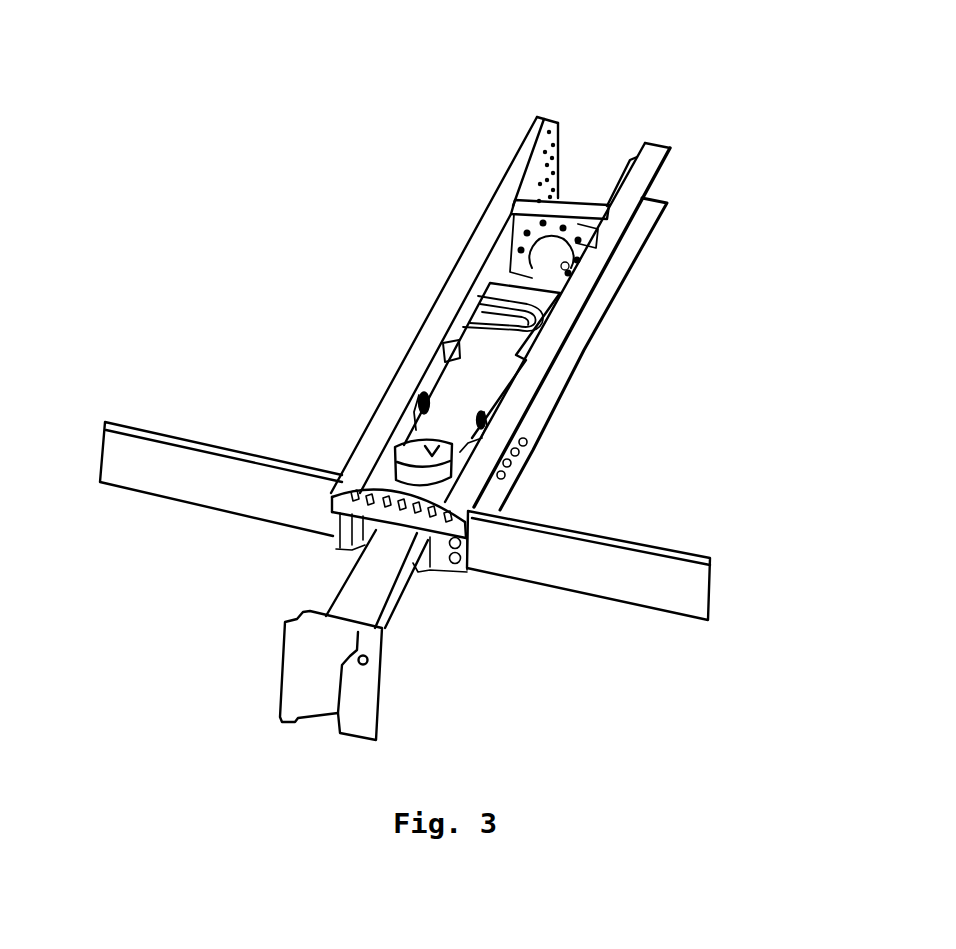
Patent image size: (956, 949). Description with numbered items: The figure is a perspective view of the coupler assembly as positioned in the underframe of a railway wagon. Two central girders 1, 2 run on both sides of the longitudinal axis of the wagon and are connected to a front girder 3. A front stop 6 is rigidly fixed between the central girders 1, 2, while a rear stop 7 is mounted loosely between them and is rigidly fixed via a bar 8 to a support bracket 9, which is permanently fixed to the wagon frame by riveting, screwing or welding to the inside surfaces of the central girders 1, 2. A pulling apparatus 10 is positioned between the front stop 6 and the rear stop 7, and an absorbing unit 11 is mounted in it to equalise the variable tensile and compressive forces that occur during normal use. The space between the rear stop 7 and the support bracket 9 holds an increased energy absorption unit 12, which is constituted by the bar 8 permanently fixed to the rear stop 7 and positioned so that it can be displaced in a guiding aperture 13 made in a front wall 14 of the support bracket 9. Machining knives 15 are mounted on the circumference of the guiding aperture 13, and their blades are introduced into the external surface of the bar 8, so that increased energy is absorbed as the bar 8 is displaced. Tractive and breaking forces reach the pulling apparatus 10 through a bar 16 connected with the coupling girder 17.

The central girder 1 is at (485, 246).
The central girder 2 is at (630, 275).
The front girder 3 is at (405, 492).
The front stop 6 is at (359, 443).
The rear stop 7 is at (461, 285).
The bar 8 is at (595, 342).
The support bracket 9 is at (626, 113).
The pulling apparatus 10 is at (382, 272).
The absorbing unit 11 is at (377, 344).
The increased energy absorption unit 12 is at (495, 133).
The guiding aperture 13 is at (648, 338).
The front wall 14 is at (684, 267).
The machining knives 15 is at (639, 294).
The bar 16 is at (257, 579).
The coupling girder 17 is at (209, 675).